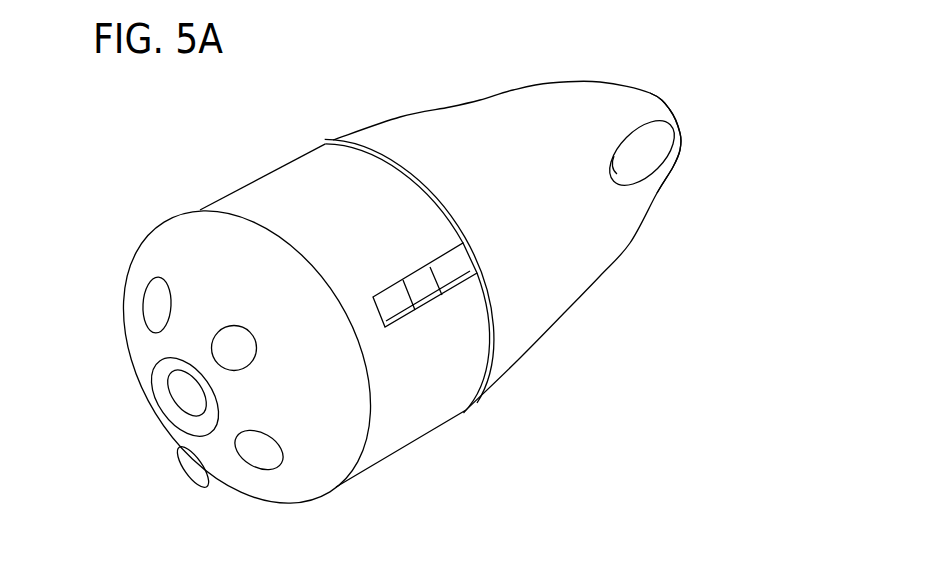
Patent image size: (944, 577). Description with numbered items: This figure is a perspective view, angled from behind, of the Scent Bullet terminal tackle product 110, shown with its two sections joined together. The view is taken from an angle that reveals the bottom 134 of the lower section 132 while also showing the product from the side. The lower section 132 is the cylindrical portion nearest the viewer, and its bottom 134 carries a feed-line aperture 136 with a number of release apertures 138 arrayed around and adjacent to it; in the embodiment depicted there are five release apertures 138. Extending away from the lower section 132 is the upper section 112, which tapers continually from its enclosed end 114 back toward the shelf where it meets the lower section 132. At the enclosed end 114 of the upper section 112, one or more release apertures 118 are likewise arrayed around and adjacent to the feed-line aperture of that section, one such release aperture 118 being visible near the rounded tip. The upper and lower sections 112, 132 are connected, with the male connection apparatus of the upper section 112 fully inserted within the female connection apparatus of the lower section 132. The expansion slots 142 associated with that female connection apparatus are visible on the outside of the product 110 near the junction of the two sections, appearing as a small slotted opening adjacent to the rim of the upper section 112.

The Scent Bullet terminal tackle product 110 is at (355, 88).
The upper section 112 is at (482, 115).
The enclosed end 114 is at (692, 100).
The release apertures 118 is at (657, 152).
The lower section 132 is at (278, 178).
The bottom 134 is at (122, 437).
The feed-line aperture 136 is at (183, 388).
The release apertures 138 is at (193, 465).
The expansion slots 142 is at (462, 262).